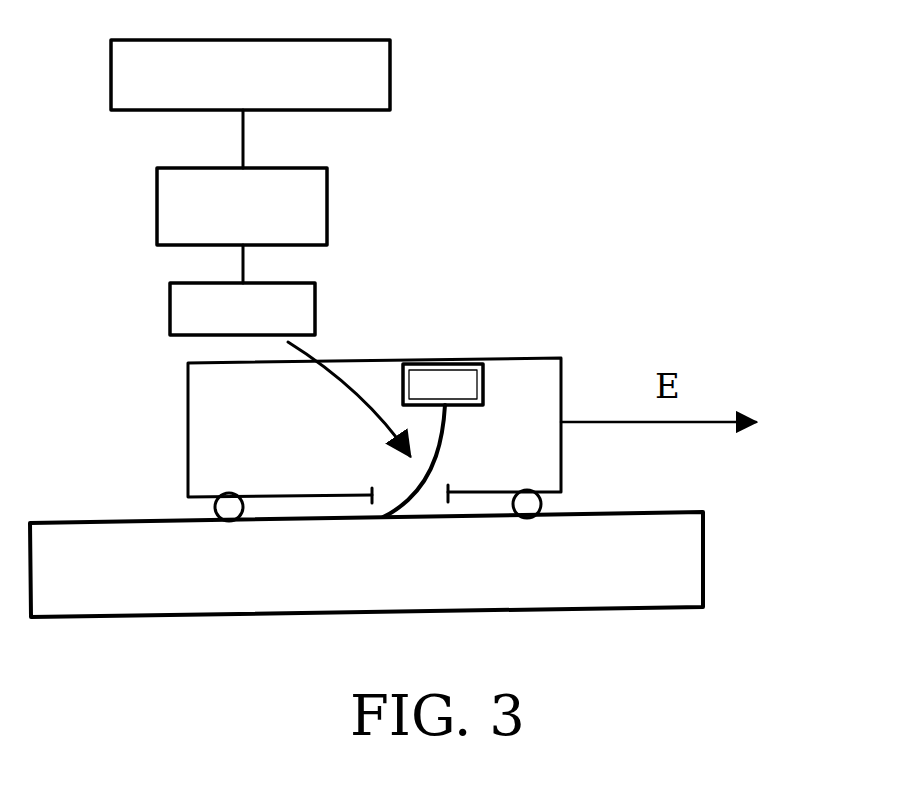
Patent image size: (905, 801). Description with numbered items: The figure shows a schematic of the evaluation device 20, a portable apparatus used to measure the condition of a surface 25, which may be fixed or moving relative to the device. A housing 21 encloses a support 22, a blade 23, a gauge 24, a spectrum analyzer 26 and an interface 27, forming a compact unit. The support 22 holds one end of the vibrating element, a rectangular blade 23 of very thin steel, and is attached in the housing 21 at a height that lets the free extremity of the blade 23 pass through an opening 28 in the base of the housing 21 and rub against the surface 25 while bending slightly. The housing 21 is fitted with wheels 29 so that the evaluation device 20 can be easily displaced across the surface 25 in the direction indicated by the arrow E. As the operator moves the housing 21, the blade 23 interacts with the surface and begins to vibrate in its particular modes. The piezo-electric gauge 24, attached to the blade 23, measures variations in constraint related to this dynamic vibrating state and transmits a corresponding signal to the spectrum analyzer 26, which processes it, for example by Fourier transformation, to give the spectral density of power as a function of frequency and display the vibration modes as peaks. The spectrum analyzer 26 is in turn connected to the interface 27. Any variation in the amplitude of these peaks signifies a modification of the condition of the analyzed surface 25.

The evaluation device 20 is at (566, 249).
The housing 21 is at (561, 377).
The support 22 is at (450, 366).
The blade 23 is at (450, 423).
The piezo-electric gauge 24 is at (298, 313).
The surface 25 is at (675, 548).
The spectrum analyzer 26 is at (283, 212).
The interface 27 is at (333, 77).
The opening 28 is at (448, 503).
The wheels 29 is at (538, 500).